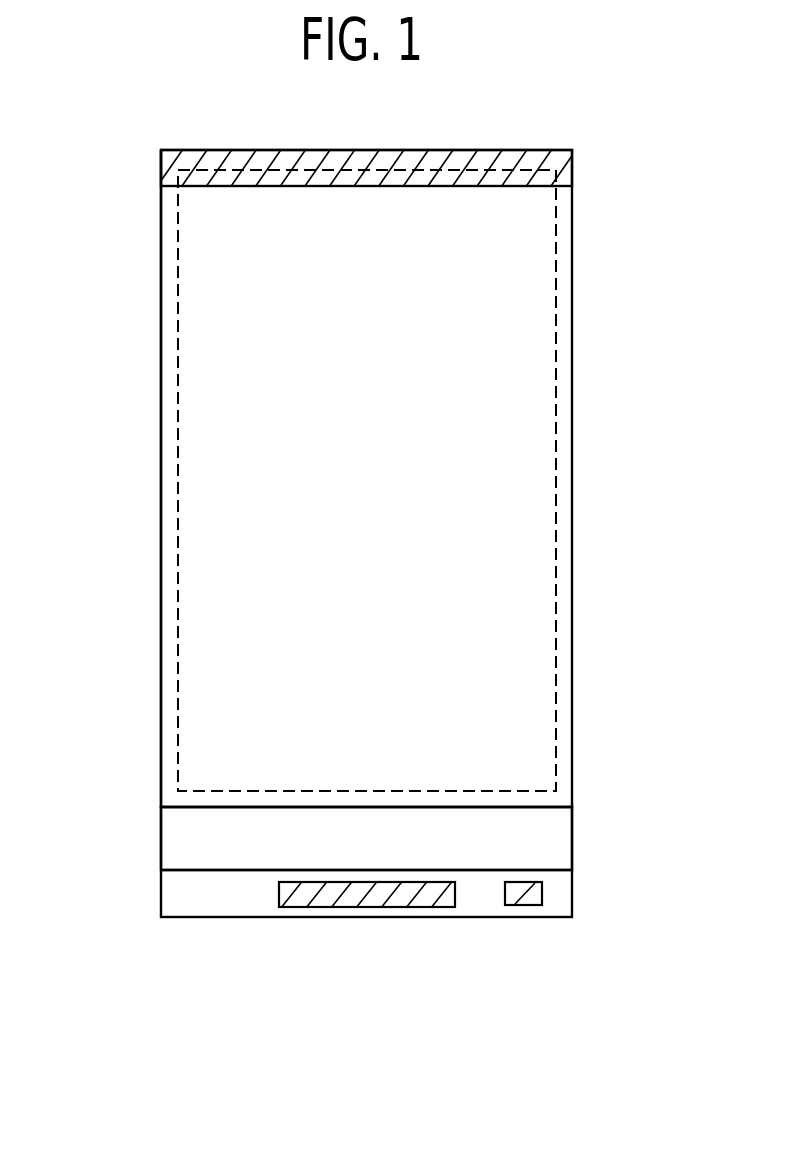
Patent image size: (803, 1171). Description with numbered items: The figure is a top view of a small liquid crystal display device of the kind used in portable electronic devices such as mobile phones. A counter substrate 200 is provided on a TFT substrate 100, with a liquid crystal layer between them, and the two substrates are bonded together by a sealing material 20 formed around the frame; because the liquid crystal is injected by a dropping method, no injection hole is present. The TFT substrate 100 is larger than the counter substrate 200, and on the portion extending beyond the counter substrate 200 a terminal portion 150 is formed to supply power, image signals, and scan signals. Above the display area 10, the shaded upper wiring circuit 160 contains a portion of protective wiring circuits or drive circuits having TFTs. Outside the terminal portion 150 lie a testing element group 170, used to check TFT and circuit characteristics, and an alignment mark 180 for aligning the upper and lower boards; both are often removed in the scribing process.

The display area 10 is at (513, 537).
The sealing material 20 is at (563, 474).
The TFT substrate 100 is at (161, 845).
The terminal portion 150 is at (547, 840).
The upper wiring circuit 160 is at (560, 158).
The testing element group (TEG) 170 is at (375, 897).
The alignment mark 180 is at (528, 897).
The counter substrate 200 is at (161, 483).